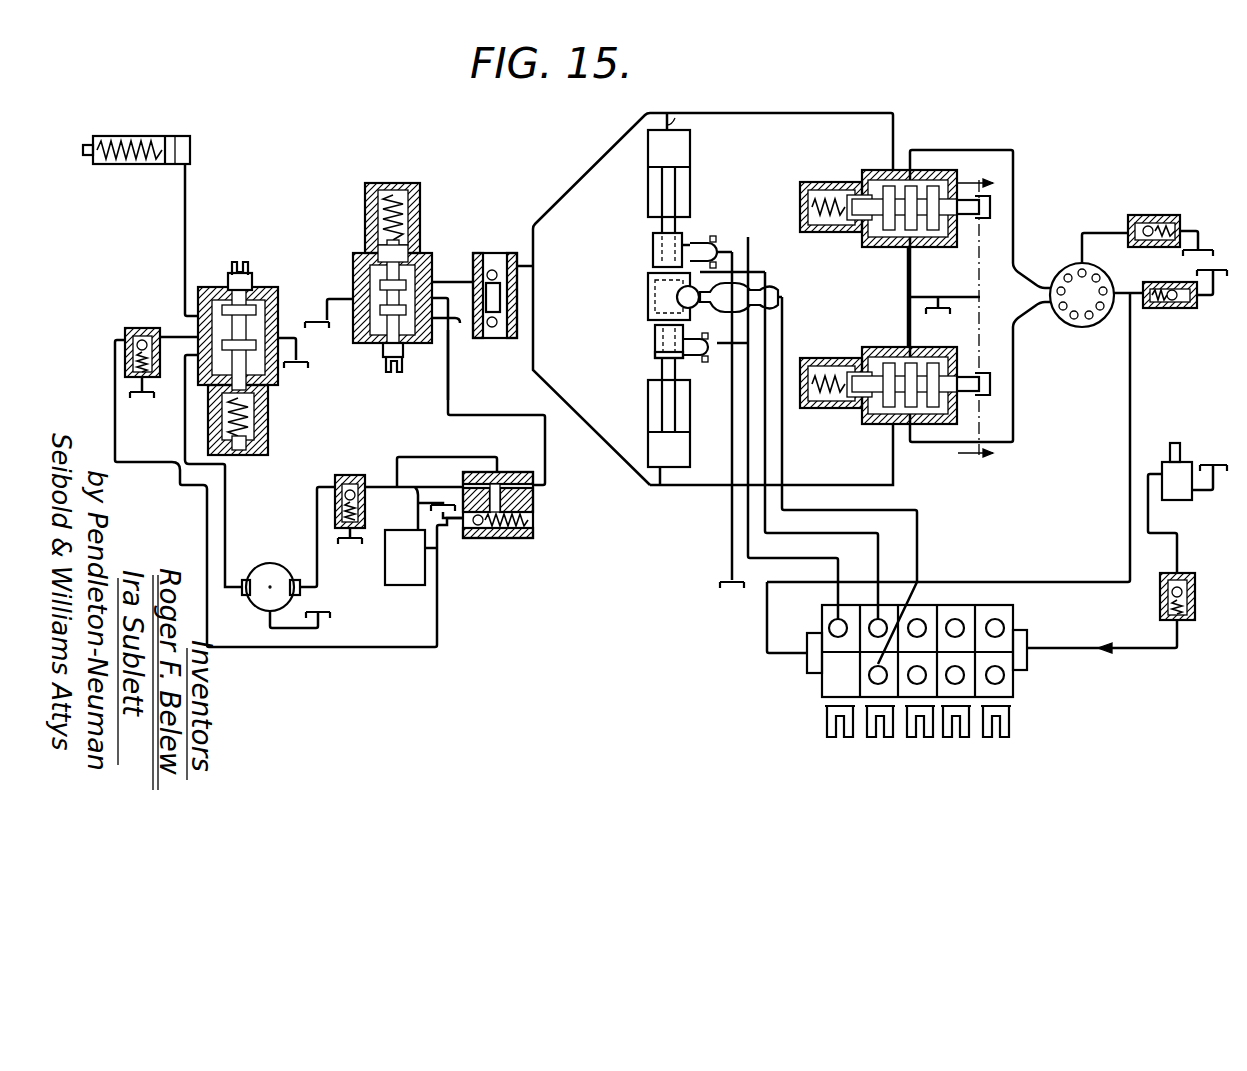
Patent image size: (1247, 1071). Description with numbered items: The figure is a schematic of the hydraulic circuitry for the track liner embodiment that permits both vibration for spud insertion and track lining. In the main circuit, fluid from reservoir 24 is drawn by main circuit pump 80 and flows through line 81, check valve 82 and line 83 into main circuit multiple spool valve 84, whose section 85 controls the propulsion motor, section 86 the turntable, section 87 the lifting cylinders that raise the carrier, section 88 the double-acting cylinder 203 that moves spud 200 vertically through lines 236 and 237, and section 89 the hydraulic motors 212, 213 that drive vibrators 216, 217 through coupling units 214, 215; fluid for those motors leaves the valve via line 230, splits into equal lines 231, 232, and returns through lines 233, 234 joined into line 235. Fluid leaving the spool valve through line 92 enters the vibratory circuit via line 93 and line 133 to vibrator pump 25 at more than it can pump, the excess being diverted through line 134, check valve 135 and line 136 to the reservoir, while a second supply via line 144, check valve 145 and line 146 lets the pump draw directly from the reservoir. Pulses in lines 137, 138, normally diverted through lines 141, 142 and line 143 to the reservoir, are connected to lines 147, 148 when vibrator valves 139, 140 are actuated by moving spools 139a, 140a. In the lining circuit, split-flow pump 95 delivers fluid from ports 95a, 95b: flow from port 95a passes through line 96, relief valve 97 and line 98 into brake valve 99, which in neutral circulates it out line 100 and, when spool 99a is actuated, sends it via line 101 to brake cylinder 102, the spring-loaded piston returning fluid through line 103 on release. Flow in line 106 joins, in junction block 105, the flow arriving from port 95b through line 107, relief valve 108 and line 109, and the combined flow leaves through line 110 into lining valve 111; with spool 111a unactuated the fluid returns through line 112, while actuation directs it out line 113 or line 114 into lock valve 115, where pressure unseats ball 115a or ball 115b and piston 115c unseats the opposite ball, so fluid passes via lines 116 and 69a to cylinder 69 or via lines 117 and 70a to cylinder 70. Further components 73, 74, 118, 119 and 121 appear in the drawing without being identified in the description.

The brake cylinder 102 is at (183, 134).
The line 101 is at (187, 203).
The brake valve 99 is at (213, 288).
The spool 99a is at (242, 273).
The line 98 is at (170, 334).
The relief valve 97 is at (126, 334).
The line 100 is at (180, 415).
The line 96 is at (228, 518).
The split-flow pump 95 is at (270, 563).
The port 95a is at (257, 612).
The port 95b is at (300, 575).
The line 107 is at (312, 486).
The relief valve 108 is at (350, 475).
The conduit 119 is at (427, 456).
The conduit 121 is at (431, 494).
The line 106 is at (445, 520).
The reservoir 118 is at (400, 586).
The junction block 105 is at (535, 498).
The line 110 is at (520, 417).
The line 109 is at (446, 400).
The lining valve 111 is at (410, 228).
The spool 111a is at (400, 373).
The line 112 is at (327, 297).
The line 103 is at (298, 350).
The line 113 is at (457, 320).
The line 114 is at (448, 280).
The lock valve 115 is at (518, 305).
The ball 115a is at (520, 328).
The ball 115b is at (530, 266).
The piston 115c is at (516, 280).
The line 117 is at (597, 168).
The line 148 is at (850, 112).
The line 116 is at (597, 394).
The line 70a is at (675, 118).
The cylinder 70 is at (692, 150).
The piston rod 74 is at (670, 200).
The vibrator 217 is at (655, 245).
The coupling unit 215 is at (690, 242).
The hydraulic motor 213 is at (717, 250).
The spud 200 is at (650, 276).
The double-acting cylinder 203 is at (682, 298).
The line 234 is at (745, 310).
The hydraulic motor 212 is at (655, 333).
The coupling unit 214 is at (688, 352).
The vibrator 216 is at (653, 358).
The piston rod 73 is at (670, 388).
The cylinder 69 is at (648, 440).
The line 69a is at (660, 470).
The line 147 is at (870, 483).
The line 235 is at (730, 535).
The line 231 is at (748, 237).
The line 230 is at (800, 556).
The line 233 is at (735, 273).
The line 237 is at (850, 536).
The line 232 is at (748, 340).
The line 236 is at (918, 530).
The line 92 is at (765, 610).
The line 93 is at (965, 582).
The line 146 is at (1138, 292).
The vibrator pump 25 is at (1068, 276).
The line 133 is at (1105, 318).
The line 134 is at (1096, 232).
The check valve 135 is at (1140, 215).
The line 136 is at (1193, 235).
The check valve 145 is at (1155, 308).
The line 144 is at (1213, 308).
The line 138 is at (1015, 170).
The line 137 is at (1015, 420).
The vibrator valve 140 is at (930, 242).
The spool 140a is at (992, 206).
The vibrator valve 139 is at (940, 424).
The spool 139a is at (992, 385).
The line 142 is at (906, 270).
The line 141 is at (906, 325).
The line 143 is at (950, 297).
The main circuit pump 80 is at (1164, 470).
The line 81 is at (1150, 520).
The check valve 82 is at (1158, 600).
The line 83 is at (1142, 649).
The main circuit multiple spool valve 84 is at (1040, 600).
The section 85 is at (1015, 688).
The section 89 is at (850, 690).
The section 88 is at (890, 690).
The section 87 is at (920, 695).
The section 86 is at (965, 695).
The reservoir 24 is at (144, 394).